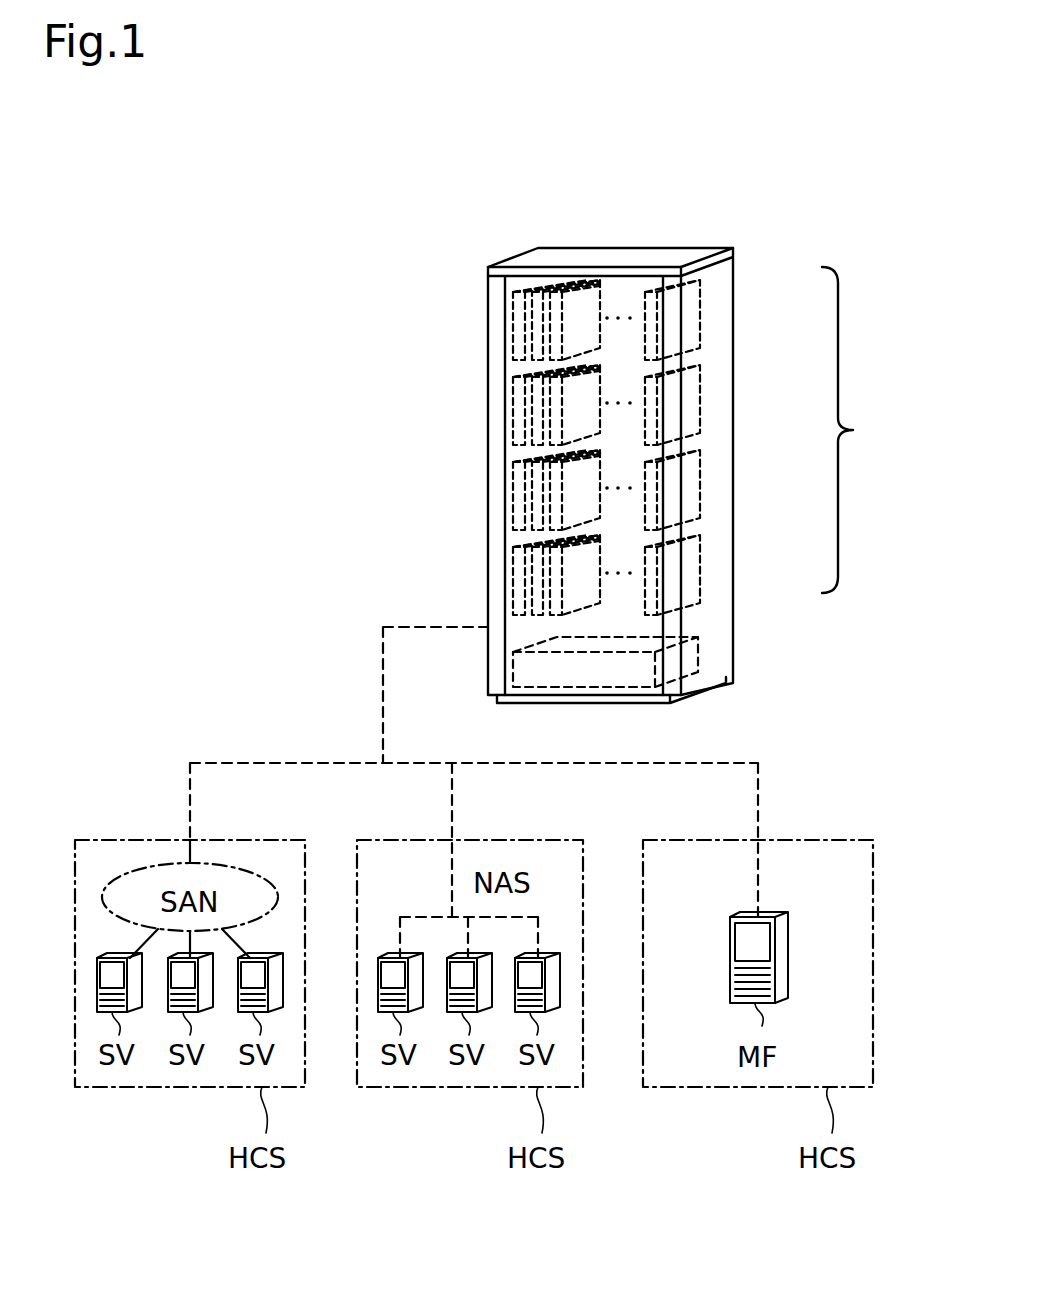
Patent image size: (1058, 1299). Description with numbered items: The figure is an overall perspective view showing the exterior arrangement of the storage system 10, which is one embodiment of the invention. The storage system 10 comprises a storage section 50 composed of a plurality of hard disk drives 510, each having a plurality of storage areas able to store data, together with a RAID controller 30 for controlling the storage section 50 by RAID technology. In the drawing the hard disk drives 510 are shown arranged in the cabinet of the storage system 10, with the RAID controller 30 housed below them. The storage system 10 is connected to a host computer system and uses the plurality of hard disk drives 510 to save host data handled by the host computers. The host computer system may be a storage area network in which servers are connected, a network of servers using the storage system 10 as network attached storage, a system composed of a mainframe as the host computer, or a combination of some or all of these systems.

The storage system 10 is at (620, 258).
The hard disk drive 510 is at (697, 318).
The storage section 50 is at (862, 430).
The RAID controller 30 is at (688, 662).